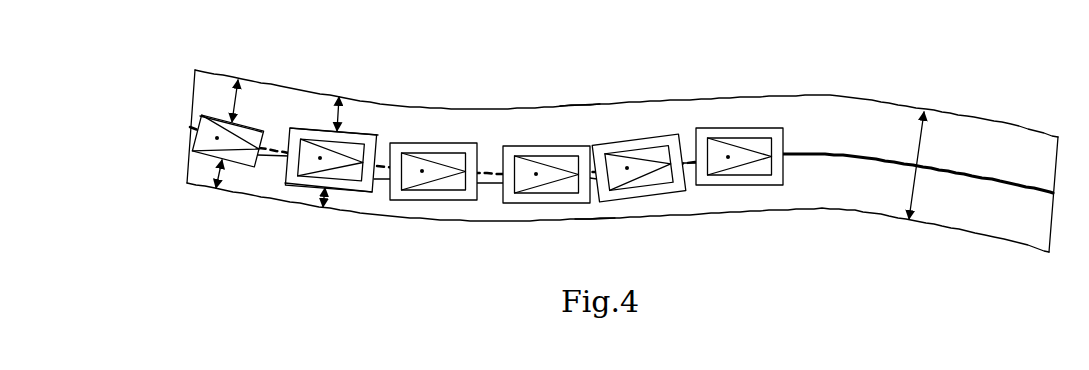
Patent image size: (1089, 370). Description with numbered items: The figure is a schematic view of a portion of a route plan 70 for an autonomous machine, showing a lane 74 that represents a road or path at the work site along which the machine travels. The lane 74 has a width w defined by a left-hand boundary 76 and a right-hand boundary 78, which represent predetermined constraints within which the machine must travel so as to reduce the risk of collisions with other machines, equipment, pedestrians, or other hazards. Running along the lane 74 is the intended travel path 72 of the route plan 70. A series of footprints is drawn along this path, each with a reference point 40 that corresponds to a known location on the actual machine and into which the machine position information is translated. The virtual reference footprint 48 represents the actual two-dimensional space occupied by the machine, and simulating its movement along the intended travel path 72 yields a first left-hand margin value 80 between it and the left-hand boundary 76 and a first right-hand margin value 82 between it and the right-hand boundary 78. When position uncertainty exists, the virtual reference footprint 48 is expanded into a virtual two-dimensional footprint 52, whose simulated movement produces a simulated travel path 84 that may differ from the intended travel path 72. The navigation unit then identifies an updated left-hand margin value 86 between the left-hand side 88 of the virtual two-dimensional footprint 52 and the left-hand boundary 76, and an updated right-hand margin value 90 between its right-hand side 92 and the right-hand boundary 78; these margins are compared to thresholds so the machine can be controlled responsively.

The reference point 40 is at (217, 138).
The virtual reference footprint 48 is at (255, 128).
The virtual two-dimensional footprint 52 is at (340, 192).
The route plan 70 is at (685, 53).
The intended travel path 72 is at (488, 196).
The lane 74 is at (858, 210).
The left-hand boundary 76 is at (585, 103).
The right-hand boundary 78 is at (593, 223).
The first left-hand margin value 80 is at (232, 92).
The first right-hand margin value 82 is at (217, 173).
The simulated travel path 84 is at (491, 164).
The updated left-hand margin value 86 is at (337, 104).
The left-hand side 88 is at (315, 127).
The updated right-hand margin value 90 is at (321, 203).
The right-hand side 92 is at (354, 197).
The width w is at (916, 164).